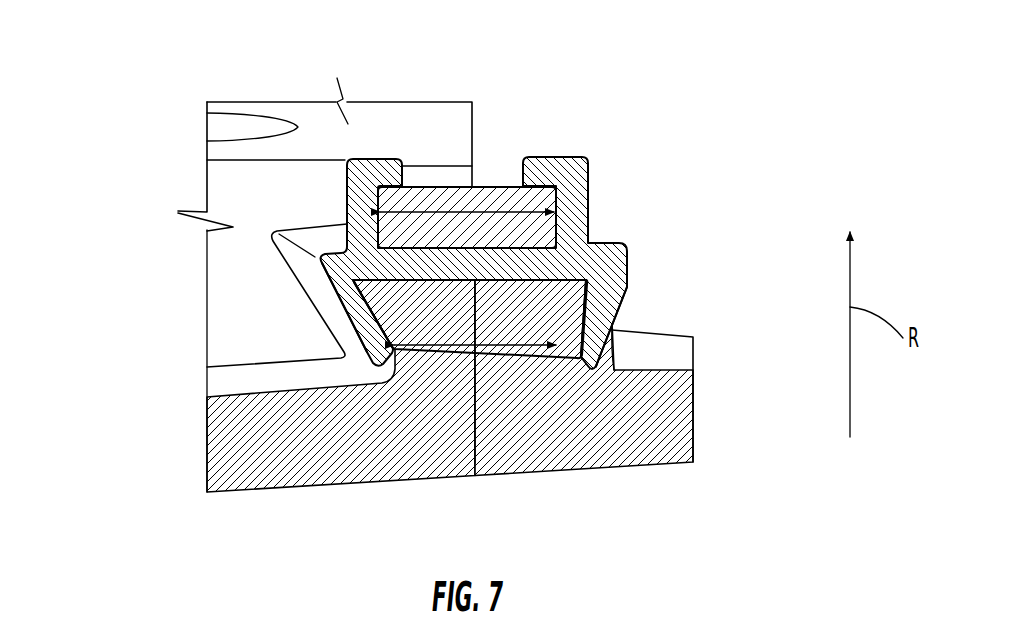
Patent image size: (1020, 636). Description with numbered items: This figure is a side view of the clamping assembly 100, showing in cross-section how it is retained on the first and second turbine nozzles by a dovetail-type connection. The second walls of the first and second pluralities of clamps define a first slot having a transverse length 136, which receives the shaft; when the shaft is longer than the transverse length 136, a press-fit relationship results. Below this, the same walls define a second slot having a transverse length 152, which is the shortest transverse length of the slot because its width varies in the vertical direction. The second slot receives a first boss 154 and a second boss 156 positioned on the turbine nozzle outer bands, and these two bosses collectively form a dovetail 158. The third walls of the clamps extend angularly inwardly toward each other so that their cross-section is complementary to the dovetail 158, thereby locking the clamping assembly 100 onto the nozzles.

The clamping assembly 100 is at (68, 83).
The transverse length of the first slot 136 is at (440, 210).
The transverse length of the second slot 152 is at (485, 356).
The first boss 154 is at (407, 320).
The second boss 156 is at (545, 312).
The dovetail 158 is at (463, 298).